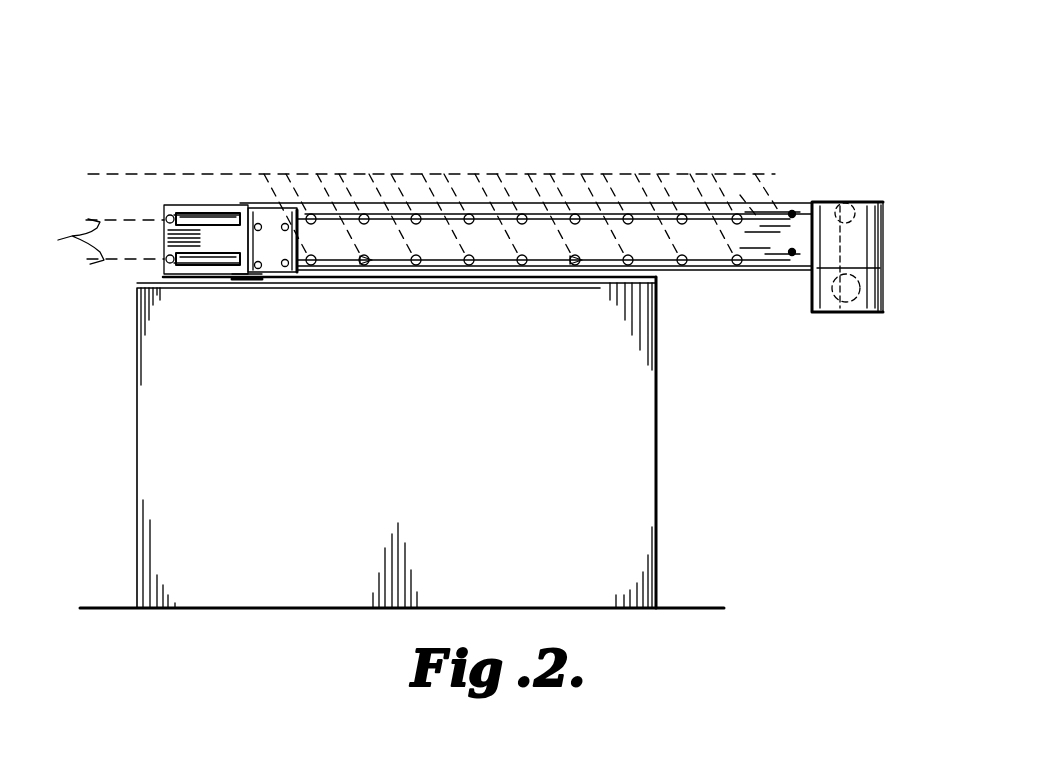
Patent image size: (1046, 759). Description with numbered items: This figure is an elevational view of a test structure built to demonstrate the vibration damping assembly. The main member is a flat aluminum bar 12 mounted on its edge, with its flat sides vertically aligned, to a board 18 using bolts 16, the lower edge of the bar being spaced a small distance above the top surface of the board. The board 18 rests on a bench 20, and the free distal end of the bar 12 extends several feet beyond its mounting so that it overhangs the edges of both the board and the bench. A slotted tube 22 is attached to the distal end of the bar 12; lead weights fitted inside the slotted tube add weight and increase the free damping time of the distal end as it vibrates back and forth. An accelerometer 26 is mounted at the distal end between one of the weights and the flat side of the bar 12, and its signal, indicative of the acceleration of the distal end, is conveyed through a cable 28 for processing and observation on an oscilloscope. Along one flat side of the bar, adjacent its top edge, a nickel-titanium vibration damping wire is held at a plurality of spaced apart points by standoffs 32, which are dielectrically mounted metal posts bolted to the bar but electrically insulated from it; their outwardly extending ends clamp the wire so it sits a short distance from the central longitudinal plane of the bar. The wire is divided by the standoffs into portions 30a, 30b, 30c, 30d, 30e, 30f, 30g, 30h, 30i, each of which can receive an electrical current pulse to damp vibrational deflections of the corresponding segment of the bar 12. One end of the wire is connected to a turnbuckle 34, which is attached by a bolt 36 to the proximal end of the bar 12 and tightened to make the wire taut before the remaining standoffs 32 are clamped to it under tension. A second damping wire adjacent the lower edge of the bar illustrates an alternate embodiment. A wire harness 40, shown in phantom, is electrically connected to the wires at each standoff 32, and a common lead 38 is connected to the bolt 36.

The flat aluminum bar 12 is at (572, 236).
The bolts 16 is at (268, 226).
The board 18 is at (308, 285).
The bench 20 is at (312, 452).
The slotted tube 22 is at (822, 314).
The accelerometer 26 is at (872, 204).
The cable 28 is at (848, 192).
The portion of the vibration damping wire 30a is at (311, 213).
The portion of the vibration damping wire 30b is at (364, 213).
The portion of the vibration damping wire 30c is at (416, 213).
The portion of the vibration damping wire 30d is at (469, 213).
The portion of the vibration damping wire 30e is at (522, 213).
The portion of the vibration damping wire 30f is at (575, 213).
The portion of the vibration damping wire 30g is at (628, 213).
The portion of the vibration damping wire 30h is at (682, 213).
The portion of the vibration damping wire 30i is at (737, 213).
The standoffs 32 is at (360, 210).
The turnbuckle 34 is at (200, 212).
The bolt 36 is at (165, 212).
The common lead 38 is at (61, 241).
The wire harness 40 is at (498, 176).